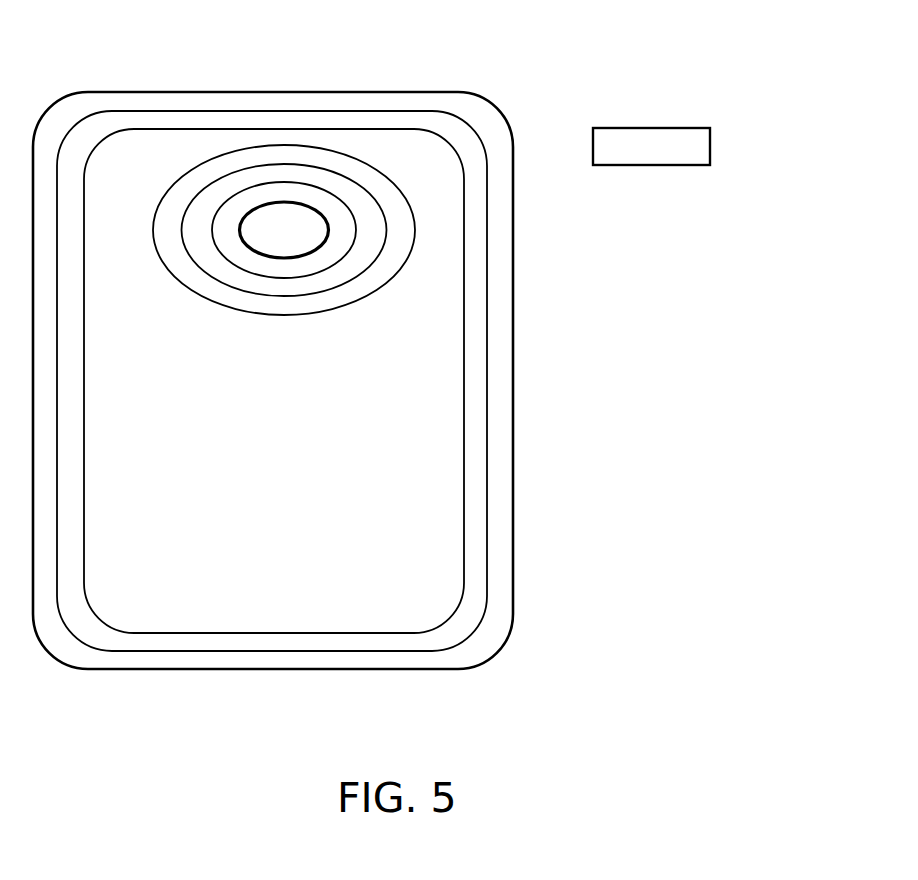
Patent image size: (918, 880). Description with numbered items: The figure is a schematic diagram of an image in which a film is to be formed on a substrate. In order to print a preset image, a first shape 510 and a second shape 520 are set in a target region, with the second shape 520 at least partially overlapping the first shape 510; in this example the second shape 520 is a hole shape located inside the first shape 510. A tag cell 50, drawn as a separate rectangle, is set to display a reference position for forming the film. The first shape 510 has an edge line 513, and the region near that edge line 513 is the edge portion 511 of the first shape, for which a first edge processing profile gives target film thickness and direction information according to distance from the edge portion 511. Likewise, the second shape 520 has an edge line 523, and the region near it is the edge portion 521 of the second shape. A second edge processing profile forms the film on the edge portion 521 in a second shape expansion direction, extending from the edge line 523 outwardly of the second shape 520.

The tag cell 50 is at (650, 128).
The first shape 510 is at (169, 155).
The edge portion of the first shape 511 is at (268, 112).
The edge line of the first shape 513 is at (348, 92).
The second shape 520 is at (278, 218).
The edge portion of the second shape 521 is at (347, 282).
The edge line of the second shape 523 is at (328, 229).